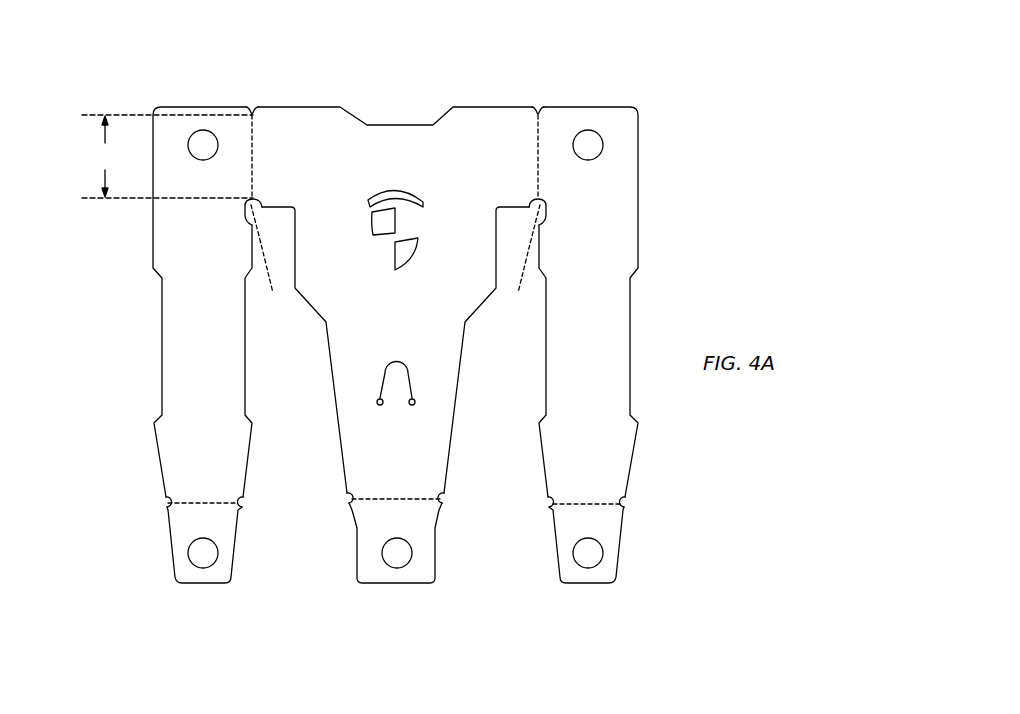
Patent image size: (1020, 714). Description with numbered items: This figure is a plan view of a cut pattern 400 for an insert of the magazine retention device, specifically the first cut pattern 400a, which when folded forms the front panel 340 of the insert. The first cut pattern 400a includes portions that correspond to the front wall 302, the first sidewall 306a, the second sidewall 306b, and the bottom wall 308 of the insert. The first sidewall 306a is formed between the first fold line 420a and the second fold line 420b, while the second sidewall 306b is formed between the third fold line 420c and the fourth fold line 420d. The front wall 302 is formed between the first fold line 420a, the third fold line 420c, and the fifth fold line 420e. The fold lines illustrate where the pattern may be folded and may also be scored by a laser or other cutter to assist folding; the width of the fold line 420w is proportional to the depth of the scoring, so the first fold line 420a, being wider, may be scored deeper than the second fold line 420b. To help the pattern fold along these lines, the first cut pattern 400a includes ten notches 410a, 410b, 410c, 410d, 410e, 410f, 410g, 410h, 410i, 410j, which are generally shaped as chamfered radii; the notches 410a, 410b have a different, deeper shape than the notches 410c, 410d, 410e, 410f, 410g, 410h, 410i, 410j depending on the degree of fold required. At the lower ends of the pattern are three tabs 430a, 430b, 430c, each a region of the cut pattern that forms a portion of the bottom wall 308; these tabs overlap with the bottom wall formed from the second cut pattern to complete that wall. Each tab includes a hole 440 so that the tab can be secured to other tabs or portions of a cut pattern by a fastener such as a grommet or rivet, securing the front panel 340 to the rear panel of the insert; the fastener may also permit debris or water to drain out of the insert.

The cut pattern 400 is at (422, 325).
The first cut pattern 400a is at (403, 343).
The front panel 340 is at (182, 87).
The front wall 302 is at (330, 375).
The first sidewall 306a is at (153, 242).
The second sidewall 306b is at (640, 205).
The bottom wall 308 is at (361, 587).
The notch 410a is at (273, 260).
The notch 410b is at (519, 260).
The notch 410c is at (252, 112).
The notch 410d is at (540, 105).
The notch 410e is at (165, 502).
The notch 410f is at (243, 502).
The notch 410g is at (348, 502).
The notch 410h is at (447, 497).
The notch 410i is at (552, 500).
The notch 410j is at (627, 502).
The first fold line 420a is at (253, 162).
The second fold line 420b is at (197, 502).
The third fold line 420c is at (538, 162).
The fourth fold line 420d is at (582, 502).
The fifth fold line 420e is at (390, 497).
The width of the fold line 420w is at (167, 156).
The tab 430a is at (168, 545).
The tab 430b is at (438, 548).
The tab 430c is at (625, 547).
The hole 440 is at (194, 565).